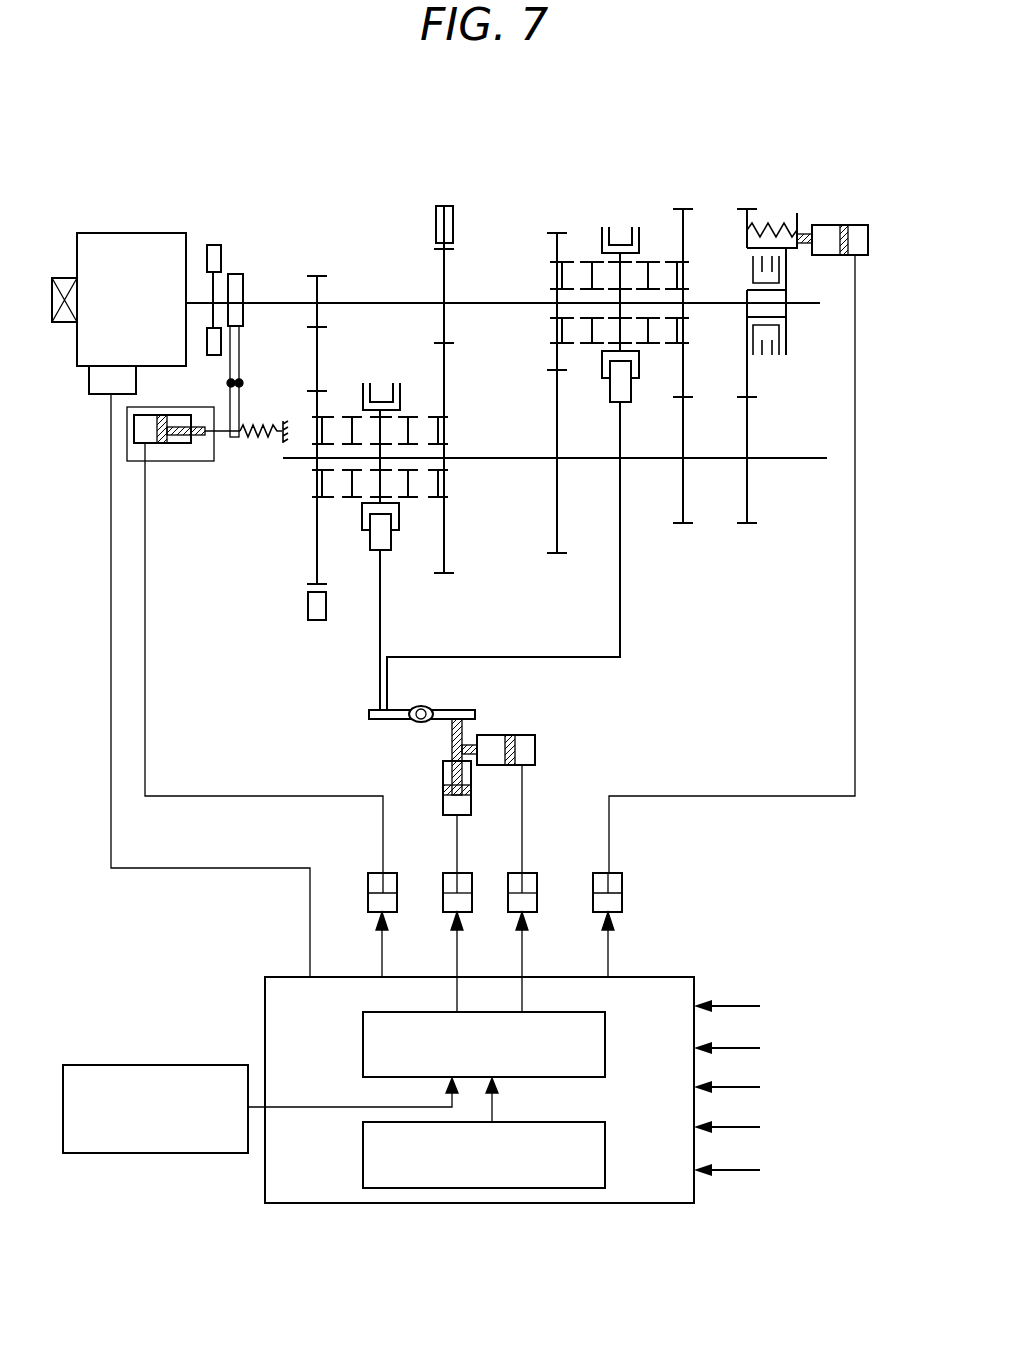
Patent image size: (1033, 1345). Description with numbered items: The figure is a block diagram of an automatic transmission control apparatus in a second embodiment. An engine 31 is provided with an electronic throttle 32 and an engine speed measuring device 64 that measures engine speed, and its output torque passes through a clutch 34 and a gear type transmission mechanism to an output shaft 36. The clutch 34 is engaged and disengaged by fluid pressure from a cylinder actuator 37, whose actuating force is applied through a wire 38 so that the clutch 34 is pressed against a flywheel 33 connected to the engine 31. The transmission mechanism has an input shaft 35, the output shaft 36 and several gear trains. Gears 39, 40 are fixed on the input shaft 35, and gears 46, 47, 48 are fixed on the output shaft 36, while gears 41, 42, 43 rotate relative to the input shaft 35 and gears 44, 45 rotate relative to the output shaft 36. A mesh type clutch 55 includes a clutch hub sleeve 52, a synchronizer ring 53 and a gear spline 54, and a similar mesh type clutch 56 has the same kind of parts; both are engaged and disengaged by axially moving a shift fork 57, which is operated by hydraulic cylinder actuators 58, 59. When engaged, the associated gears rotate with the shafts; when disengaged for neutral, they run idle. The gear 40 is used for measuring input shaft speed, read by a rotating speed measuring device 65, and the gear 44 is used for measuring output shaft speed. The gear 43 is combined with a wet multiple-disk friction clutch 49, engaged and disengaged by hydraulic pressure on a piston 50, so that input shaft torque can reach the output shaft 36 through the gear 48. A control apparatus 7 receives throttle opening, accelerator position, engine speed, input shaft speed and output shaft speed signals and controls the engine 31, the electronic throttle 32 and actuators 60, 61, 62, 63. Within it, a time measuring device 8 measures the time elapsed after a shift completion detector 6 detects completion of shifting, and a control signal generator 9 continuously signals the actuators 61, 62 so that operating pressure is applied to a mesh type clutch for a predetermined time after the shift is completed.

The shift completion detector 6 is at (166, 1065).
The control apparatus 7 is at (463, 798).
The time measuring device 8 is at (606, 1156).
The control signal generator 9 is at (606, 1047).
The engine 31 is at (136, 233).
The electronic throttle 32 is at (92, 395).
The flywheel 33 is at (213, 245).
The clutch 34 is at (240, 274).
The input shaft 35 is at (375, 302).
The output shaft 36 is at (315, 622).
The cylinder actuator 37 is at (161, 445).
The wire 38 is at (220, 435).
The gear 39 is at (317, 276).
The gear 40 is at (445, 280).
The gear 41 is at (557, 232).
The gear 42 is at (683, 209).
The gear 43 is at (747, 209).
The gear 44 is at (317, 573).
The gear 45 is at (444, 576).
The gear 46 is at (557, 556).
The gear 47 is at (683, 526).
The gear 48 is at (747, 526).
The friction clutch 49 is at (776, 356).
The piston 50 is at (857, 225).
The clutch hub sleeve 52 is at (610, 262).
The synchronizer ring 53 is at (632, 270).
The gear spline 54 is at (660, 262).
The mesh type clutch 55 is at (553, 100).
The mesh type clutch 56 is at (410, 370).
The shift fork 57 is at (455, 706).
The hydraulic cylinder actuator 58 is at (537, 748).
The hydraulic cylinder actuator 59 is at (443, 790).
The actuator 60 is at (370, 877).
The actuator 61 is at (445, 877).
The actuator 62 is at (535, 877).
The actuator 63 is at (620, 877).
The engine speed measuring device 64 is at (65, 278).
The rotating speed measuring device 65 is at (444, 204).